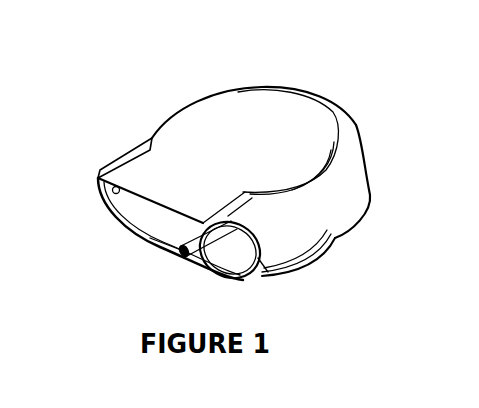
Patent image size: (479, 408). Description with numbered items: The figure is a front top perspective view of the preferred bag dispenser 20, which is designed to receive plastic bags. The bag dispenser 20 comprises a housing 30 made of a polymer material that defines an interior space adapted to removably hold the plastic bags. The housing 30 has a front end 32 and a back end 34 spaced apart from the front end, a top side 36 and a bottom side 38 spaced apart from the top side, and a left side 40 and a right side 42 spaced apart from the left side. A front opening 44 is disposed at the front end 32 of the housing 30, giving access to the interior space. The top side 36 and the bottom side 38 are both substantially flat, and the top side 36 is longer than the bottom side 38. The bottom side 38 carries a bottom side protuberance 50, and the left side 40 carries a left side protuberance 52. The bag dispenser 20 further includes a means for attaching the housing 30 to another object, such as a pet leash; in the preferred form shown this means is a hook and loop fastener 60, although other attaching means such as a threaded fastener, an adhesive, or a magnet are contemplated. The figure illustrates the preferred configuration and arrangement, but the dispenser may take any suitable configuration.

The bag dispenser 20 is at (281, 77).
The housing 30 is at (327, 98).
The front end 32 is at (143, 255).
The back end 34 is at (362, 115).
The top side 36 is at (222, 106).
The bottom side 38 is at (343, 226).
The left side 40 is at (164, 119).
The right side 42 is at (347, 200).
The front opening 44 is at (143, 213).
The bottom side protuberance 50 is at (183, 258).
The left side protuberance 52 is at (107, 196).
The hook and loop fastener 60 is at (310, 267).